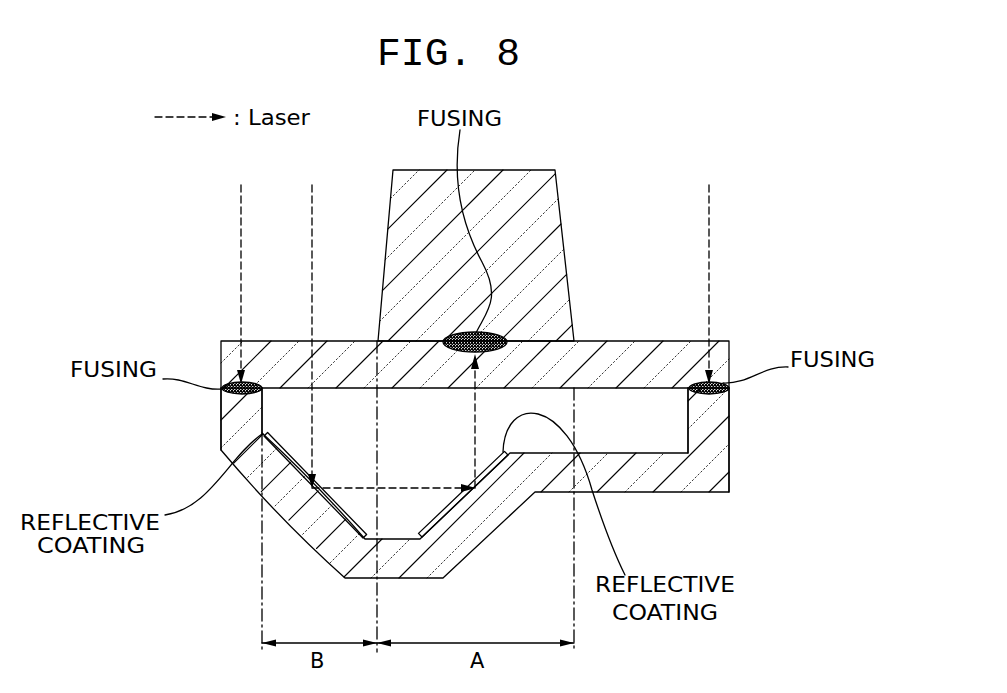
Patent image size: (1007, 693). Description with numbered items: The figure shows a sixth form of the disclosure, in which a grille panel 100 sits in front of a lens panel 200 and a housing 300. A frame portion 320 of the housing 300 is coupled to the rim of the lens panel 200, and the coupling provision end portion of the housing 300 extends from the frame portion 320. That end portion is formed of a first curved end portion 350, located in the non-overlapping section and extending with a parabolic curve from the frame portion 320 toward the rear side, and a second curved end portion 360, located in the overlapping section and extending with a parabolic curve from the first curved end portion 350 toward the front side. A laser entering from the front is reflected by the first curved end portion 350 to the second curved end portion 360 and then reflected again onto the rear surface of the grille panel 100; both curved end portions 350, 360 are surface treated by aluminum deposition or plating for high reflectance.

The grille panel 100 is at (569, 214).
The lens panel 200 is at (637, 326).
The housing 300 is at (729, 512).
The frame portion 320 is at (235, 418).
The first curved end portion 350 is at (308, 520).
The second curved end portion 360 is at (483, 523).